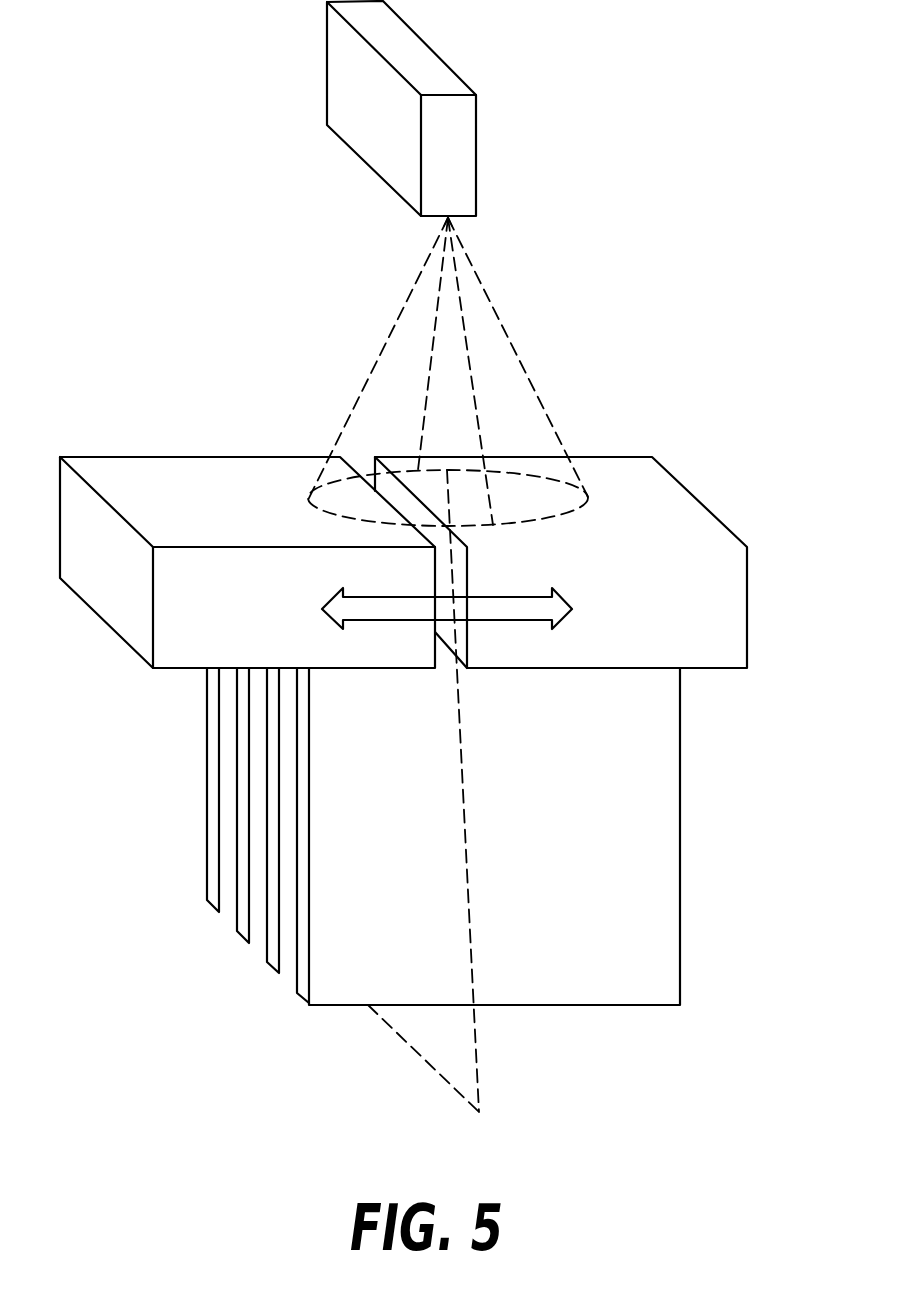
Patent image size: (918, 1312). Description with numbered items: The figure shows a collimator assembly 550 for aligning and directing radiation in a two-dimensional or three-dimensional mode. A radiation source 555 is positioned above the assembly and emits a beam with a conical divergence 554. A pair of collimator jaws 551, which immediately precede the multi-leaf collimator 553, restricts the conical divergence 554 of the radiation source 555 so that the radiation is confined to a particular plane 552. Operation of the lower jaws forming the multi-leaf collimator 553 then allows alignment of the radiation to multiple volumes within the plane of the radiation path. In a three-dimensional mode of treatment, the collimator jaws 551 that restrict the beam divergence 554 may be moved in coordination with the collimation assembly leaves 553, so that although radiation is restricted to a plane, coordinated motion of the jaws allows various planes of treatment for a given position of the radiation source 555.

The collimator assembly 550 is at (227, 398).
The collimator jaws 551 is at (108, 603).
The plane 552 is at (478, 1065).
The multi-leaf collimator 553 is at (234, 957).
The conical divergence 554 is at (525, 335).
The radiation source 555 is at (407, 53).